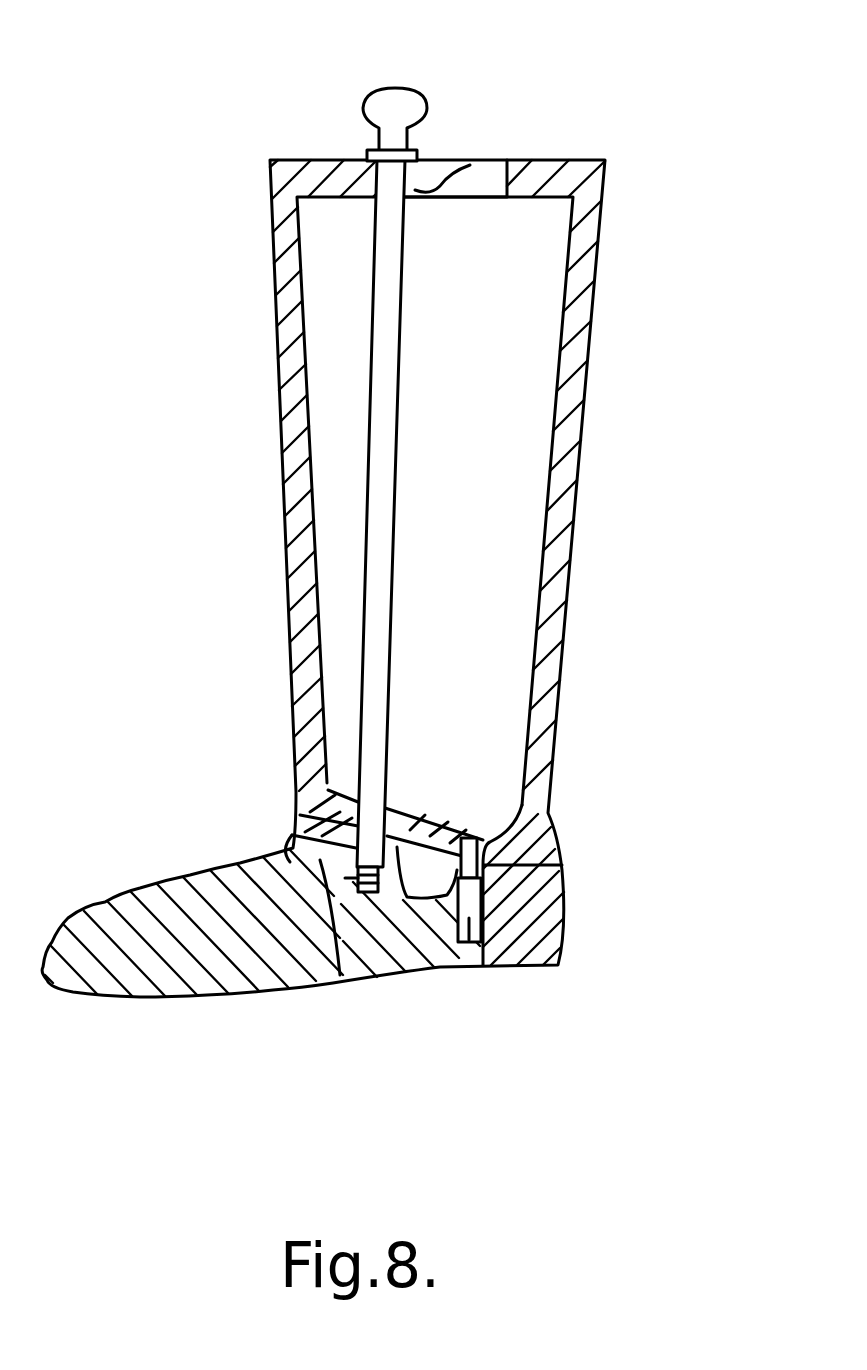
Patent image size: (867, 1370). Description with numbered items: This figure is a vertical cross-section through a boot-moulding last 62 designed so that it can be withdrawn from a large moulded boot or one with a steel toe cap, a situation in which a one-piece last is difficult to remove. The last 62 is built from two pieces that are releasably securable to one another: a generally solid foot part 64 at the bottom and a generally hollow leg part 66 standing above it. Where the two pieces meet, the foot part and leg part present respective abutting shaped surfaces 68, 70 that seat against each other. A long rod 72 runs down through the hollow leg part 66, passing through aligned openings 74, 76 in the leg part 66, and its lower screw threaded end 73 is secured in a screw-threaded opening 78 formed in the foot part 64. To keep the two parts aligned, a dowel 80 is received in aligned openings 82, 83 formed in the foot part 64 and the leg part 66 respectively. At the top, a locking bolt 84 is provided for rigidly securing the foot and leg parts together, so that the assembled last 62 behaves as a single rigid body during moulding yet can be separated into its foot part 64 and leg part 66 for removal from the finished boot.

The last 62 is at (260, 432).
The foot part 64 is at (133, 888).
The leg part 66 is at (552, 550).
The shaped surface 68 is at (398, 813).
The shaped surface 70 is at (283, 845).
The rod 72 is at (362, 523).
The screw threaded end 73 is at (373, 892).
The opening 74 is at (415, 182).
The opening 76 is at (297, 798).
The screw-threaded opening 78 is at (365, 893).
The dowel 80 is at (470, 903).
The opening 82 is at (468, 945).
The opening 83 is at (520, 865).
The locking bolt 84 is at (372, 107).